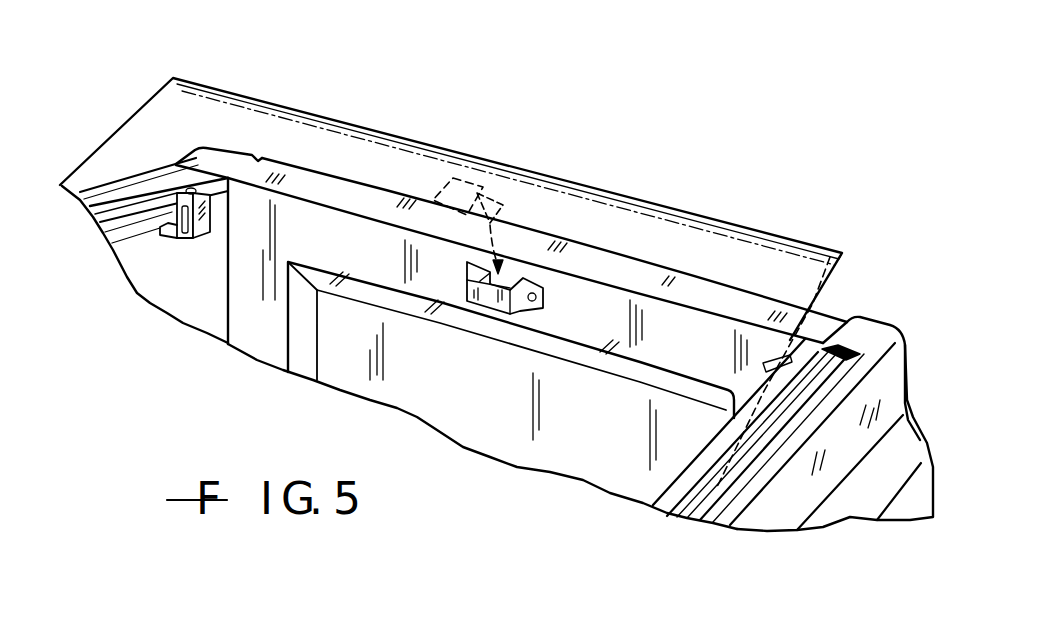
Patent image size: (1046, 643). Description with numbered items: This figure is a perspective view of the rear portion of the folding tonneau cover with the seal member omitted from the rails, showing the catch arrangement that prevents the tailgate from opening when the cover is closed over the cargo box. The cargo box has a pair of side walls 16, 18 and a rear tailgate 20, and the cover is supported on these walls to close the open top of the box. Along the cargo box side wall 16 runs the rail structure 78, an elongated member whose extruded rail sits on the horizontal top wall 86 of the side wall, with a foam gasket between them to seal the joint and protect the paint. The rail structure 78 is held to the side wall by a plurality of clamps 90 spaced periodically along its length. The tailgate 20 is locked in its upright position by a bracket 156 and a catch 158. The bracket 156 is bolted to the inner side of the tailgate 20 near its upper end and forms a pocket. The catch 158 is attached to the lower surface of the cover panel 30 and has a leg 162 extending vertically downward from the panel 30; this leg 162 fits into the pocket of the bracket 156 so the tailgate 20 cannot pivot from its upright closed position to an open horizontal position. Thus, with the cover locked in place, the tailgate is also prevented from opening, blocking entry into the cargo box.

The side wall 16 is at (837, 440).
The side wall 18 is at (150, 257).
The rear tailgate 20 is at (710, 275).
The panel 30 is at (387, 128).
The rail structure 78 is at (128, 182).
The horizontal top wall 86 is at (226, 153).
The clamp 90 is at (180, 247).
The bracket 156 is at (484, 297).
The catch 158 is at (467, 176).
The leg 162 is at (505, 190).